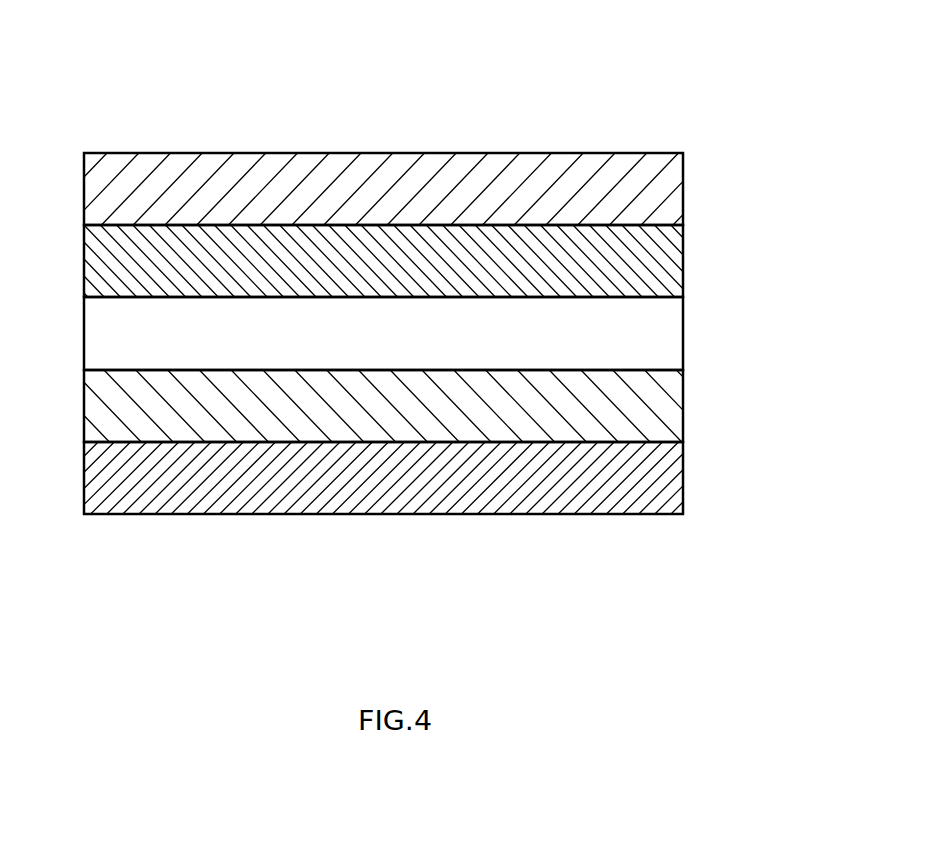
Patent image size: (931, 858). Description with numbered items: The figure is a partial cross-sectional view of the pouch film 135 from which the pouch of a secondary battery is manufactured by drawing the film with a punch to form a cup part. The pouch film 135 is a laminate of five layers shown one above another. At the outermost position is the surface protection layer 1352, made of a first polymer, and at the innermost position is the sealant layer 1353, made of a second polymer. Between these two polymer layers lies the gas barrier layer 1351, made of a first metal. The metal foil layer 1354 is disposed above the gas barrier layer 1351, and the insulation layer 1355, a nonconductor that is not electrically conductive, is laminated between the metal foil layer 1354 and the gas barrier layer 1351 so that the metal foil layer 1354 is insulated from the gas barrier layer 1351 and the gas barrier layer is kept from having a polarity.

The pouch film 135 is at (384, 76).
The gas barrier layer 1351 is at (683, 405).
The surface protection layer 1352 is at (683, 188).
The sealant layer 1353 is at (683, 477).
The metal foil layer 1354 is at (683, 259).
The insulation layer 1355 is at (683, 332).